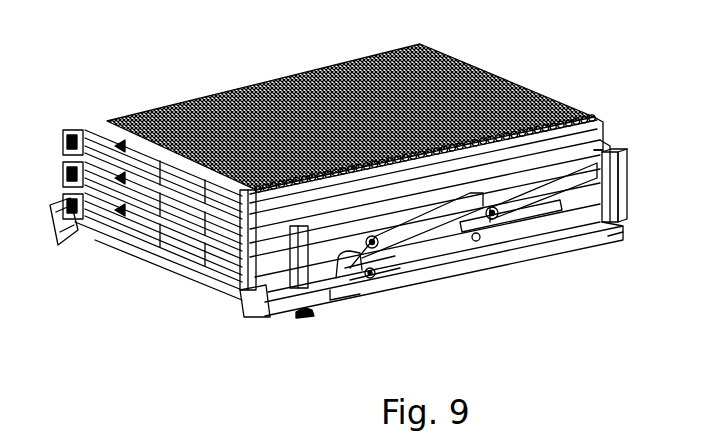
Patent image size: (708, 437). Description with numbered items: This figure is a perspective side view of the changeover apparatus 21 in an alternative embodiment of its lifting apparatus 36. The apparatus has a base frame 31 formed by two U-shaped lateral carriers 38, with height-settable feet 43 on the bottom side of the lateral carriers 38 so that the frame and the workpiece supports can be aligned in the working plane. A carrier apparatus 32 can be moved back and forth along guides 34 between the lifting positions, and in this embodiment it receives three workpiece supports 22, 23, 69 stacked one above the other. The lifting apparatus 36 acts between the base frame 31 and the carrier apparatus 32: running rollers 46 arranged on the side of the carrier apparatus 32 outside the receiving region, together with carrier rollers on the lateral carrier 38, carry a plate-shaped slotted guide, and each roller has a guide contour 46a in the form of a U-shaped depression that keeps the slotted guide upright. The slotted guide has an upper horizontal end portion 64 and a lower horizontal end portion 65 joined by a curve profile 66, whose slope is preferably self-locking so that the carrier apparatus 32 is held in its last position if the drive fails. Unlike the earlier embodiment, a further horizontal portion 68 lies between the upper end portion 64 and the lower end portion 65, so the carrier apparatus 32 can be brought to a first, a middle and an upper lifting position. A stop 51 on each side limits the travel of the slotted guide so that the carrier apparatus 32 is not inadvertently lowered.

The changeover apparatus 21 is at (538, 45).
The workpiece support 22 is at (88, 100).
The workpiece support 23 is at (58, 160).
The base frame 31 is at (642, 237).
The carrier apparatus 32 is at (630, 129).
The guide 34 is at (640, 152).
The lifting apparatus 36 is at (448, 268).
The lateral carrier 38 is at (625, 240).
The foot 43 is at (308, 325).
The running roller 46 is at (354, 262).
The guide contour 46a is at (667, 419).
The stop 51 is at (243, 291).
The upper horizontal end portion 64 is at (476, 212).
The lower horizontal end portion 65 is at (343, 256).
The curve profile 66 is at (385, 245).
The further horizontal portion 68 is at (433, 232).
The workpiece support 69 is at (60, 233).